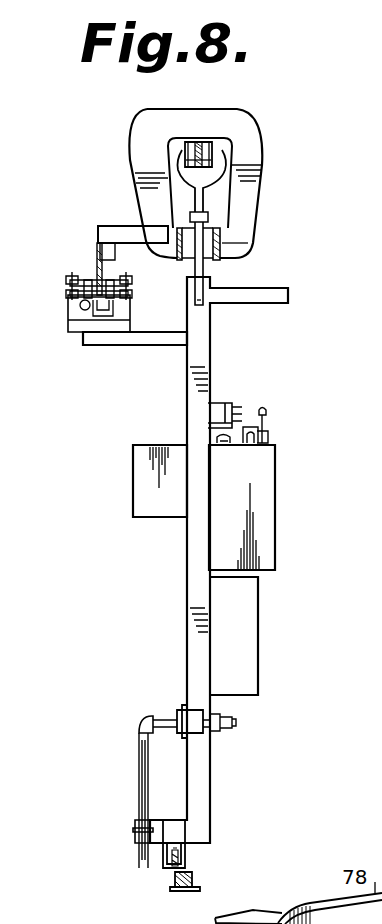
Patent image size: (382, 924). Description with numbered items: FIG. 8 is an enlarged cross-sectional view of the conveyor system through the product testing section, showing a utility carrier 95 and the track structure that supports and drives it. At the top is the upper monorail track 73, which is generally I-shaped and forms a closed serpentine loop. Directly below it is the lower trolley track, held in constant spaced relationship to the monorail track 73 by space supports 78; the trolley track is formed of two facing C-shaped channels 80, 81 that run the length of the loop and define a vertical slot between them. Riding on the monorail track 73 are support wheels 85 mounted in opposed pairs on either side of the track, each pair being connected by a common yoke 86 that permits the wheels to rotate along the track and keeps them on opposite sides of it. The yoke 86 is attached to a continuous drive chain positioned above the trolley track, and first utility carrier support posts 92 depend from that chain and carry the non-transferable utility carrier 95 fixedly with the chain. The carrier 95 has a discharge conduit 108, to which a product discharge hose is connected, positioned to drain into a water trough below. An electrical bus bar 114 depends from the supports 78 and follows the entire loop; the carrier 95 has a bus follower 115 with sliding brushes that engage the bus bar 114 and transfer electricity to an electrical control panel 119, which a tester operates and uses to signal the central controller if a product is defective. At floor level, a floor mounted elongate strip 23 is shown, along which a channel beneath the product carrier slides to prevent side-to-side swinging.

The space supports 78 is at (262, 133).
The upper monorail track 73 is at (190, 140).
The support wheels 85 is at (205, 150).
The yoke 86 is at (210, 177).
The C-shaped channel 81 is at (252, 243).
The C-shaped channel 80 is at (185, 258).
The first utility carrier support posts 92 is at (205, 268).
The electrical bus bar 114 is at (96, 258).
The bus follower 115 is at (80, 312).
The electrical control panel 119 is at (268, 506).
The first utility carrier 95 is at (187, 668).
The discharge conduit 108 is at (139, 788).
The floor mounted elongate strip 23 is at (173, 871).